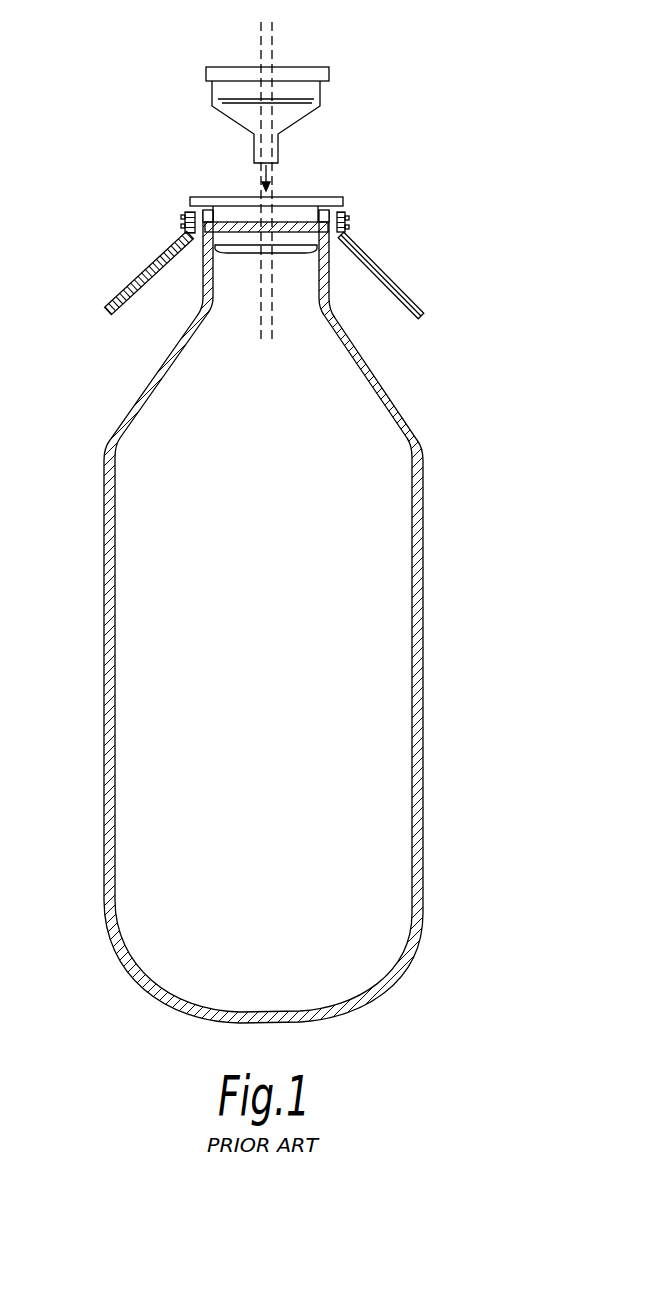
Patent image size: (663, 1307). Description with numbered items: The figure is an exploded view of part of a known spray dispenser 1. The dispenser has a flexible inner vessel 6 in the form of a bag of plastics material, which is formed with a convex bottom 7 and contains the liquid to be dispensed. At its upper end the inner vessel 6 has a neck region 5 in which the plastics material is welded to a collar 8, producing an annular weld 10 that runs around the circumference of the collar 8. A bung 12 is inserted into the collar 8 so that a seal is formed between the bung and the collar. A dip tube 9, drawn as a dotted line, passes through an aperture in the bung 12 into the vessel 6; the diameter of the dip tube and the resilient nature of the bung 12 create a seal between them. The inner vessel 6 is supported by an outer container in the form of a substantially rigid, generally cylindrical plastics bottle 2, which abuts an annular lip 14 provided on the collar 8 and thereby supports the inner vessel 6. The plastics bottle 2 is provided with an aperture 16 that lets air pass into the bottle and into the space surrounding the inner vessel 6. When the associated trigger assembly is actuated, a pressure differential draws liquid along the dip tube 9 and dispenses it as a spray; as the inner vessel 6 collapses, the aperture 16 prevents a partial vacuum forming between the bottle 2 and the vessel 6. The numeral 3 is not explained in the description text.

The spray dispenser 1 is at (449, 418).
The plastics bottle 2 is at (150, 265).
The clip 3 is at (350, 225).
The neck region 5 is at (296, 283).
The inner vessel 6 is at (116, 580).
The convex bottom 7 is at (332, 1013).
The collar 8 is at (310, 192).
The dip tube 9 is at (261, 37).
The annular weld 10 is at (228, 192).
The bung 12 is at (300, 110).
The annular lip 14 is at (345, 202).
The aperture 16 is at (108, 299).